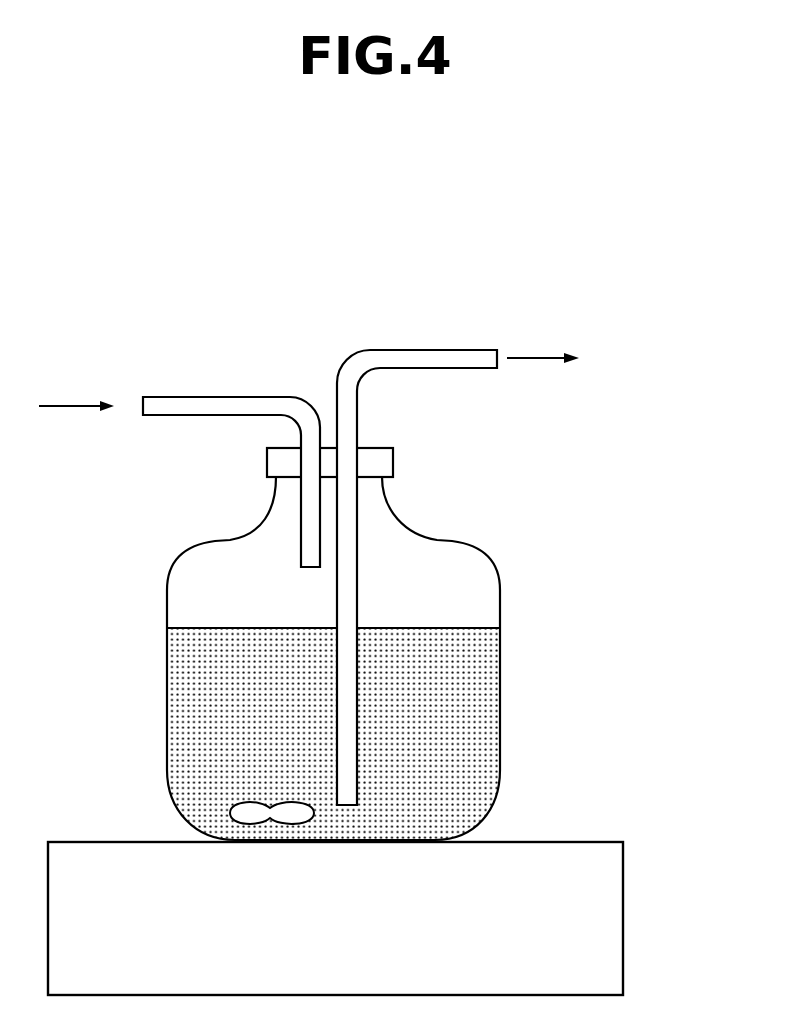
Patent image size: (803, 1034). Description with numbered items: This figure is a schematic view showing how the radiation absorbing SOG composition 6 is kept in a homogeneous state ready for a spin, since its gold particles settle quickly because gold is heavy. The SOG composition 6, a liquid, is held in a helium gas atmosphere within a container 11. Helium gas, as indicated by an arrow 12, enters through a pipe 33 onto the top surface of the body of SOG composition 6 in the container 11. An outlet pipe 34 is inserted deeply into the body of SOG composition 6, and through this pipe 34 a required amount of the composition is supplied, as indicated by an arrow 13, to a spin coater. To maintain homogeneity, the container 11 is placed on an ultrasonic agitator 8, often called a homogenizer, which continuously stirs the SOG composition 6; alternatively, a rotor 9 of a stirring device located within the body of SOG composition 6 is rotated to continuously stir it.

The SOG composition 6 is at (486, 700).
The ultrasonic agitator 8 is at (548, 842).
The rotor 9 is at (235, 816).
The container 11 is at (455, 540).
The arrow 12 is at (65, 406).
The arrow 13 is at (530, 358).
The pipe 33 is at (225, 397).
The outlet pipe 34 is at (425, 350).